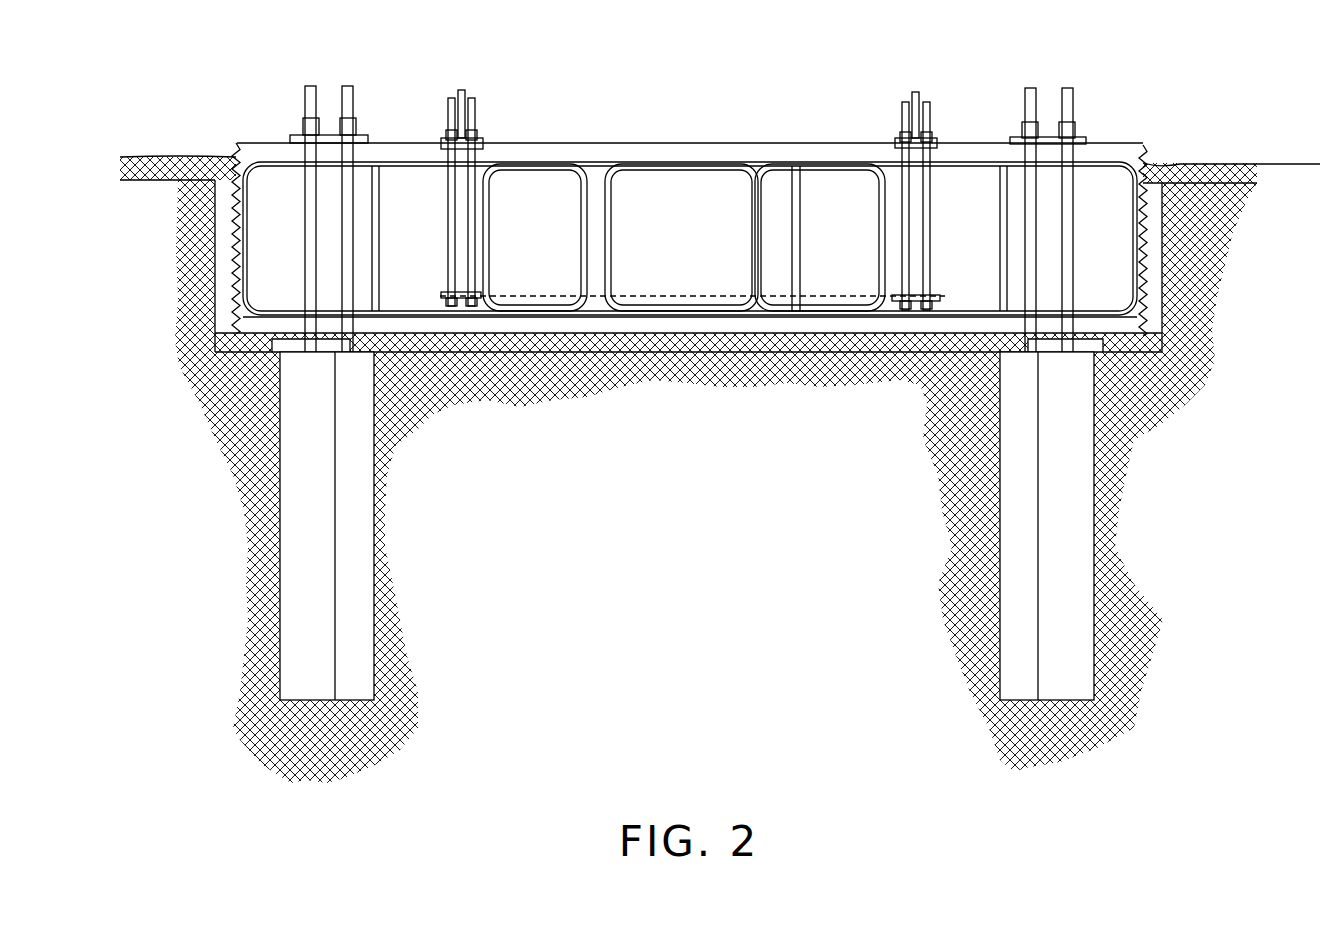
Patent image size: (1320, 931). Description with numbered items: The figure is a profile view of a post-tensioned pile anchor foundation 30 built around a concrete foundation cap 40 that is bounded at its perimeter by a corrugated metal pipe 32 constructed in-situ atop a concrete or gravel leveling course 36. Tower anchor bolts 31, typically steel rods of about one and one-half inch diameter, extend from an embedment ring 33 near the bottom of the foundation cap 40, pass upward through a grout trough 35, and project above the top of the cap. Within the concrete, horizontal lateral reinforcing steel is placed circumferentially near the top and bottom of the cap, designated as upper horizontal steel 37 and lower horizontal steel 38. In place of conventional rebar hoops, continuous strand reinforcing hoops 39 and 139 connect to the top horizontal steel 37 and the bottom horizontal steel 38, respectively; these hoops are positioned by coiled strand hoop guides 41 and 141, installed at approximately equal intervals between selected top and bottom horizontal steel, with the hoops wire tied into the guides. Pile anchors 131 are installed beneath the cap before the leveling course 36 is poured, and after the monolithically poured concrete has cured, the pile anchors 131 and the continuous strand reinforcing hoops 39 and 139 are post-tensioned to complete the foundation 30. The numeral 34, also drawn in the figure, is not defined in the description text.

The pile anchor foundation 30 is at (1213, 73).
The tower anchor bolts 31 is at (475, 110).
The perimeter corrugated metal pipe 32 is at (1143, 147).
The embedment ring 33 is at (947, 303).
The piles 34 is at (278, 439).
The grout trough 35 is at (937, 140).
The leveling course 36 is at (1150, 347).
The upper horizontal (lateral) steel 37 is at (1135, 185).
The lower horizontal (lateral) steel 38 is at (1137, 272).
The continuous strand reinforcing hoop 39 is at (250, 143).
The concrete foundation cap 40 is at (275, 234).
The coiled strand hoop guide 41 is at (1140, 164).
The pile anchor 131 is at (302, 97).
The continuous strand reinforcing hoop 139 is at (1140, 308).
The coiled strand hoop guide 141 is at (240, 309).